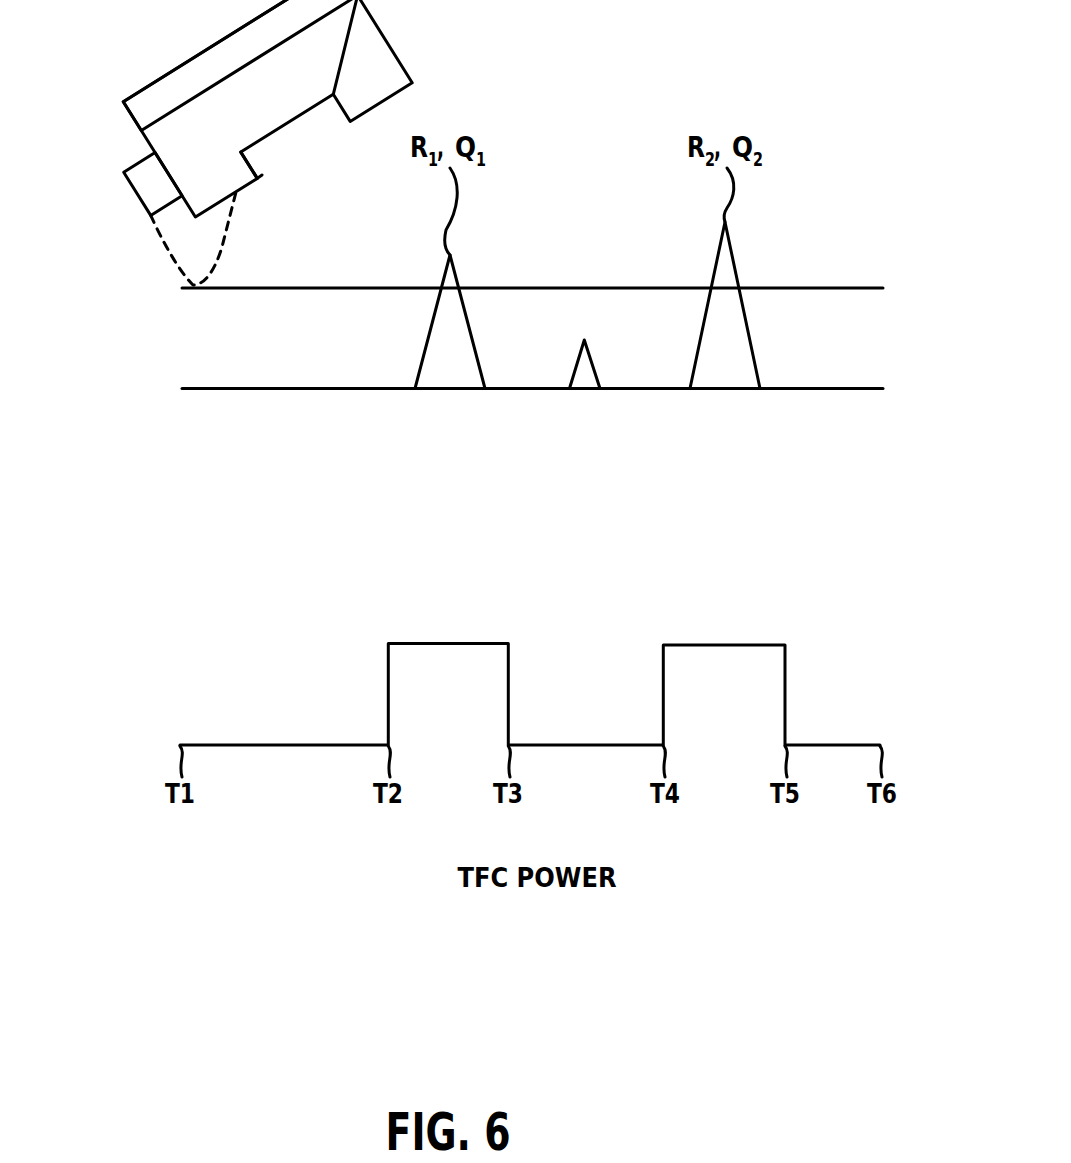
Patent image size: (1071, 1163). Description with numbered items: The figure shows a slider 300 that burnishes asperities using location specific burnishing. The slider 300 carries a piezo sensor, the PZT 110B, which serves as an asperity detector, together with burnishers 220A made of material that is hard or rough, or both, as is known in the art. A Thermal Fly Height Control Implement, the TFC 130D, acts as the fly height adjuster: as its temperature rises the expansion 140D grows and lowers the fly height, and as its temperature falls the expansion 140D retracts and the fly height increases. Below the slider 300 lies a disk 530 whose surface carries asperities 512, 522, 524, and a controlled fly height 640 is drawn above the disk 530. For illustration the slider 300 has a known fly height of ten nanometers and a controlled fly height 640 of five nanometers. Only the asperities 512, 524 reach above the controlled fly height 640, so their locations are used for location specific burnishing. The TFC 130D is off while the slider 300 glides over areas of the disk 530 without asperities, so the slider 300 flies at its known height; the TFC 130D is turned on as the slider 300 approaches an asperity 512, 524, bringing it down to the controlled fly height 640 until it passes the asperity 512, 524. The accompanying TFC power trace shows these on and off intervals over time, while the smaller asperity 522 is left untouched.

The piezo sensor (PZT) 110B is at (240, 65).
The slider 300 is at (240, 108).
The burnisher 220A is at (350, 108).
The TFC (Thermal Fly Height Control Implement) 130D is at (153, 178).
The expansion 140D is at (163, 247).
The controlled fly height 640 is at (812, 288).
The disk 530 is at (830, 393).
The asperity 512 is at (450, 373).
The asperity 522 is at (584, 378).
The asperity 524 is at (732, 378).